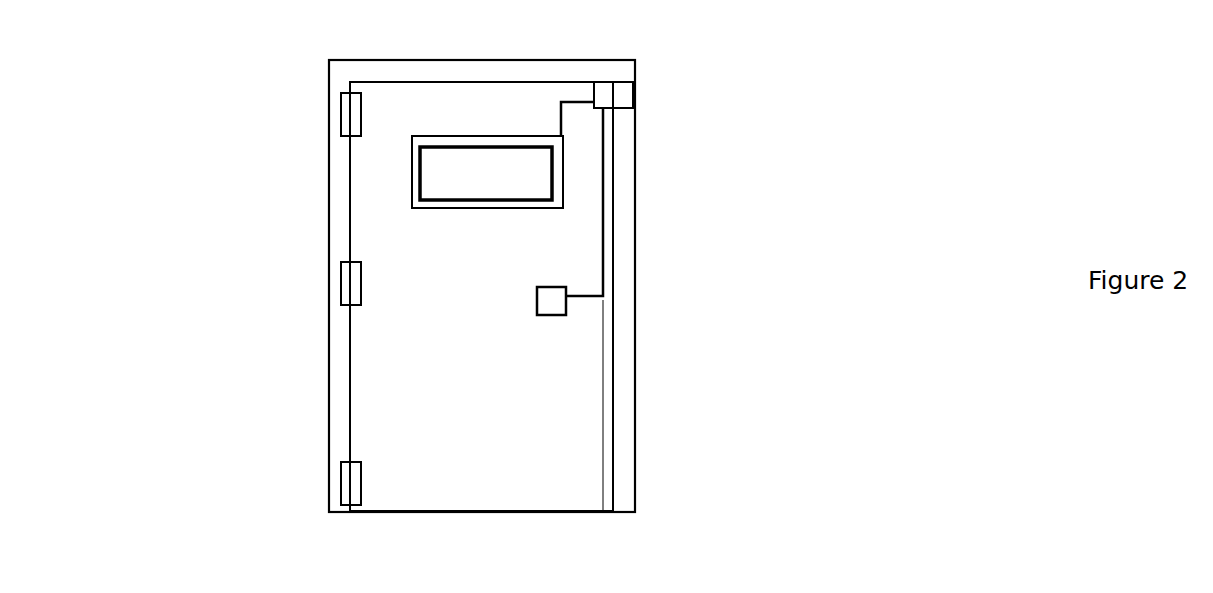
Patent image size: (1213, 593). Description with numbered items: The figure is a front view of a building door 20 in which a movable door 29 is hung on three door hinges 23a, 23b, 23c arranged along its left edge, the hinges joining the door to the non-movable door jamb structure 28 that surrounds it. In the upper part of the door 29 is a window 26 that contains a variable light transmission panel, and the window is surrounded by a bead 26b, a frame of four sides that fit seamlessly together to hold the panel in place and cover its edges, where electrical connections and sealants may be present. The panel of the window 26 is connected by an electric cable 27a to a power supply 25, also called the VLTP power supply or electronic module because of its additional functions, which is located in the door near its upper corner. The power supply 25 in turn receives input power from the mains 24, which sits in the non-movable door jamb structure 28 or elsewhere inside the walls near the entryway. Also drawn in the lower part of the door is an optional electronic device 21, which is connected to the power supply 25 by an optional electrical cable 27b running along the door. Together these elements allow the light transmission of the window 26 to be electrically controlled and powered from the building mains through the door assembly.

The building door 20 is at (802, 347).
The electronic device 21 is at (537, 296).
The door hinge 23a is at (341, 118).
The door hinge 23b is at (341, 283).
The door hinge 23c is at (341, 483).
The mains 24 is at (622, 102).
The power supply 25 is at (603, 92).
The window 26 is at (520, 186).
The bead 26b is at (412, 193).
The electric cable 27a is at (561, 126).
The electrical cable 27b is at (605, 225).
The door jamb structure 28 is at (621, 372).
The door 29 is at (593, 438).